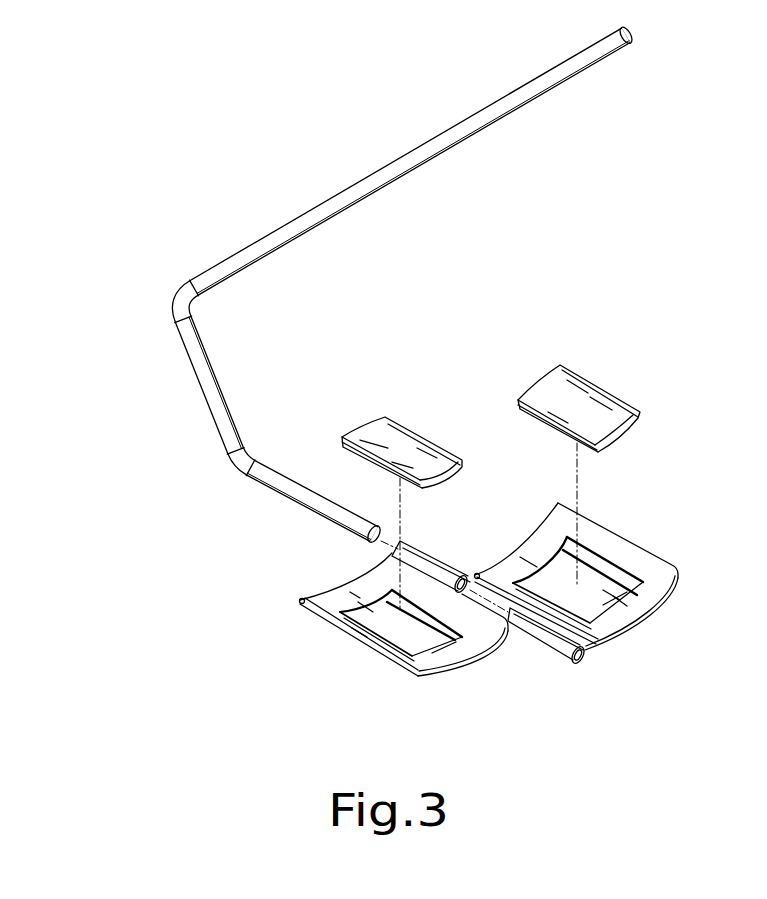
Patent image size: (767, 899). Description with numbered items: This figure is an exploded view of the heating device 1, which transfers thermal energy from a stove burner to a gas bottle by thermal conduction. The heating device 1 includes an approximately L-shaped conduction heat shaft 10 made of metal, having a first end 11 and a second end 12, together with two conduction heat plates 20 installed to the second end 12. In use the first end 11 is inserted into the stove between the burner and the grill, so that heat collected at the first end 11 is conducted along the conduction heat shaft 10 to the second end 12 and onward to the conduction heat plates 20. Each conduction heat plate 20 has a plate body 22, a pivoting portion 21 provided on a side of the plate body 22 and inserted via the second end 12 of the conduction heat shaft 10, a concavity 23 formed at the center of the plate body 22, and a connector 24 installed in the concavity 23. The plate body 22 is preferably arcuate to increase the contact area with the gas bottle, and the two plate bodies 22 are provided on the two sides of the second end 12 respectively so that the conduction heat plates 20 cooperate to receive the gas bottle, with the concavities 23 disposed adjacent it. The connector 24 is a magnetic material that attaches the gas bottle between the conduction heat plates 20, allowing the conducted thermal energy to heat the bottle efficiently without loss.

The heating device 1 is at (399, 407).
The conduction heat shaft 10 is at (355, 318).
The first end 11 is at (525, 97).
The second end 12 is at (300, 495).
The conduction heat plate 20 is at (500, 559).
The pivoting portion 21 is at (420, 553).
The plate body 22 is at (425, 673).
The concavity 23 is at (355, 630).
The connector 24 is at (395, 423).